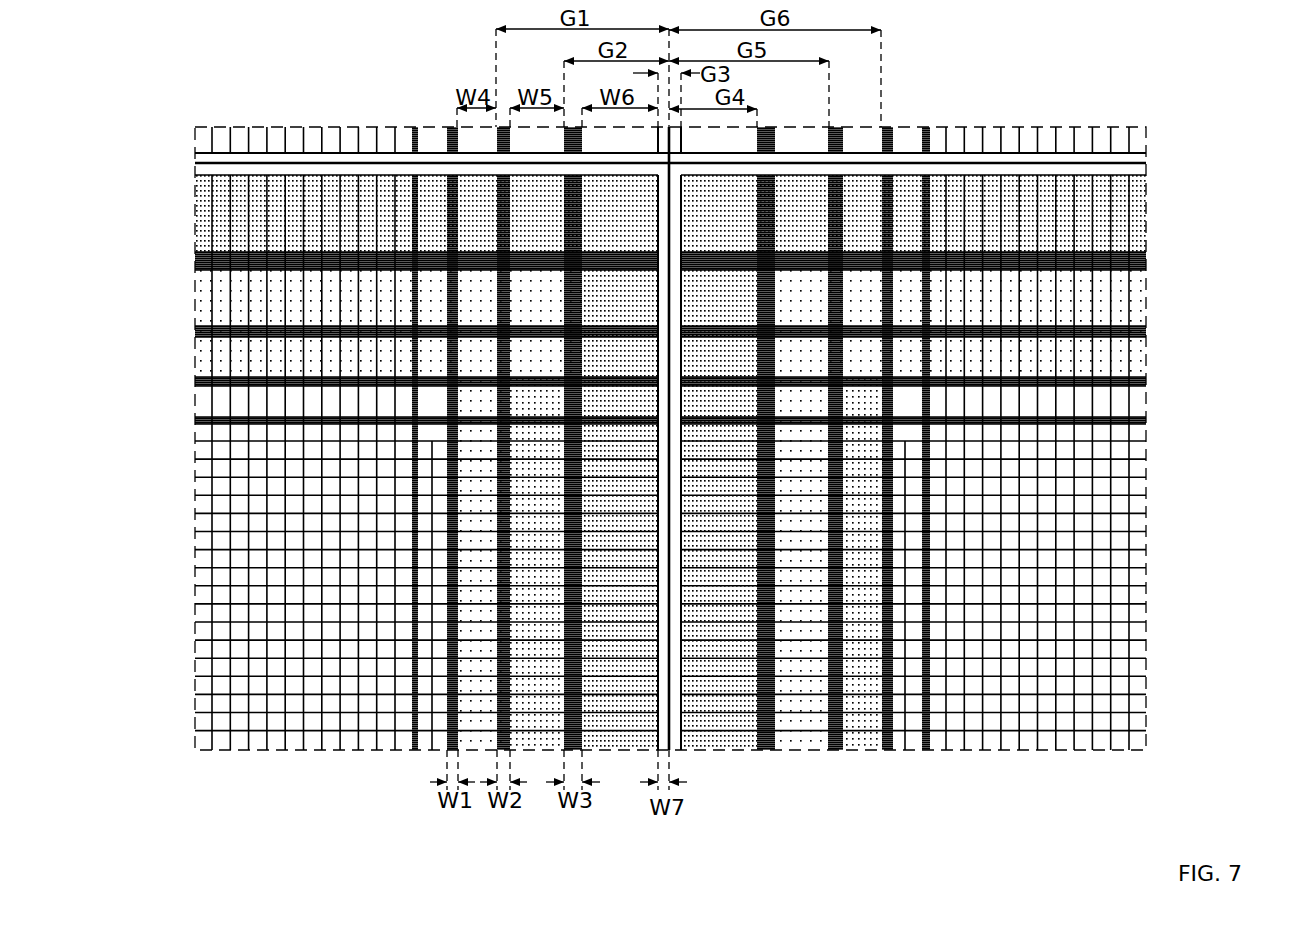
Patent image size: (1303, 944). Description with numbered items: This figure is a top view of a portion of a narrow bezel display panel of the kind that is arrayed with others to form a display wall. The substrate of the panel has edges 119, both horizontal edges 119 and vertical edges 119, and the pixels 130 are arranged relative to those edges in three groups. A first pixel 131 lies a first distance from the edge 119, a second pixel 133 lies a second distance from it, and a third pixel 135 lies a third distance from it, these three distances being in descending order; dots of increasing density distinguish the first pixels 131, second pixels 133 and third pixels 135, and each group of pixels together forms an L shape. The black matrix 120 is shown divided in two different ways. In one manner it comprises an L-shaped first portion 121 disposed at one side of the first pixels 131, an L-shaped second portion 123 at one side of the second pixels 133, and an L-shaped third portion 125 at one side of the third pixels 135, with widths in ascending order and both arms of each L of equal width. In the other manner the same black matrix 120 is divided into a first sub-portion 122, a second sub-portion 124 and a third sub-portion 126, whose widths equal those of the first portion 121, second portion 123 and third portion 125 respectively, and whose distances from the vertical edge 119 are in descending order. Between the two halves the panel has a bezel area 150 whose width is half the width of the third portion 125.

The edge 119 is at (195, 160).
The black matrix 120 is at (125, 432).
The first portion 121 is at (450, 484).
The second portion 123 is at (520, 460).
The third portion 125 is at (570, 442).
The pixels 130 is at (863, 511).
The first pixel 131 is at (475, 723).
The second pixel 133 is at (532, 723).
The third pixel 135 is at (612, 723).
The first sub-portion 122 is at (893, 477).
The second sub-portion 124 is at (836, 750).
The third sub-portion 126 is at (765, 750).
The bezel area 150 is at (680, 748).